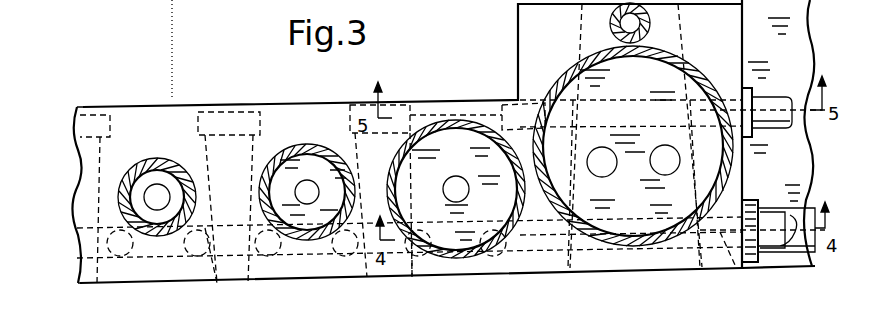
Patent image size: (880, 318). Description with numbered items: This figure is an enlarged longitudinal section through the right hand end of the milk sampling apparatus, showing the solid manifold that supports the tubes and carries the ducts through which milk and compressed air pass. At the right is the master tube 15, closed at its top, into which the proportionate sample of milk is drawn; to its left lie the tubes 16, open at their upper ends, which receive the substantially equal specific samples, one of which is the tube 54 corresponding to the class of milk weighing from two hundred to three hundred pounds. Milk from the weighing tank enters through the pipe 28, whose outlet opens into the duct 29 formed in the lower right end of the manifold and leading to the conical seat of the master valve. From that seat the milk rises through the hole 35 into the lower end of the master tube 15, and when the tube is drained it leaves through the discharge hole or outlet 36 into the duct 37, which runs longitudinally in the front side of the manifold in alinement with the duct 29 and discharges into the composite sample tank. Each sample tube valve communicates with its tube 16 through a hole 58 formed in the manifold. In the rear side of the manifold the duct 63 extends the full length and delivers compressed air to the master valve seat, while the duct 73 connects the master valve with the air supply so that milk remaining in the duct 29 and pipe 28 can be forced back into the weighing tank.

The master tube 15 is at (688, 65).
The tubes 16 is at (468, 280).
The pipe 28 is at (777, 233).
The duct 29 is at (745, 272).
The hole 35 is at (602, 162).
The discharge hole or outlet 36 is at (665, 160).
The duct 37 is at (410, 282).
The tube 54 is at (160, 230).
The hole 58 is at (307, 192).
The duct 63 is at (235, 112).
The duct 73 is at (740, 268).